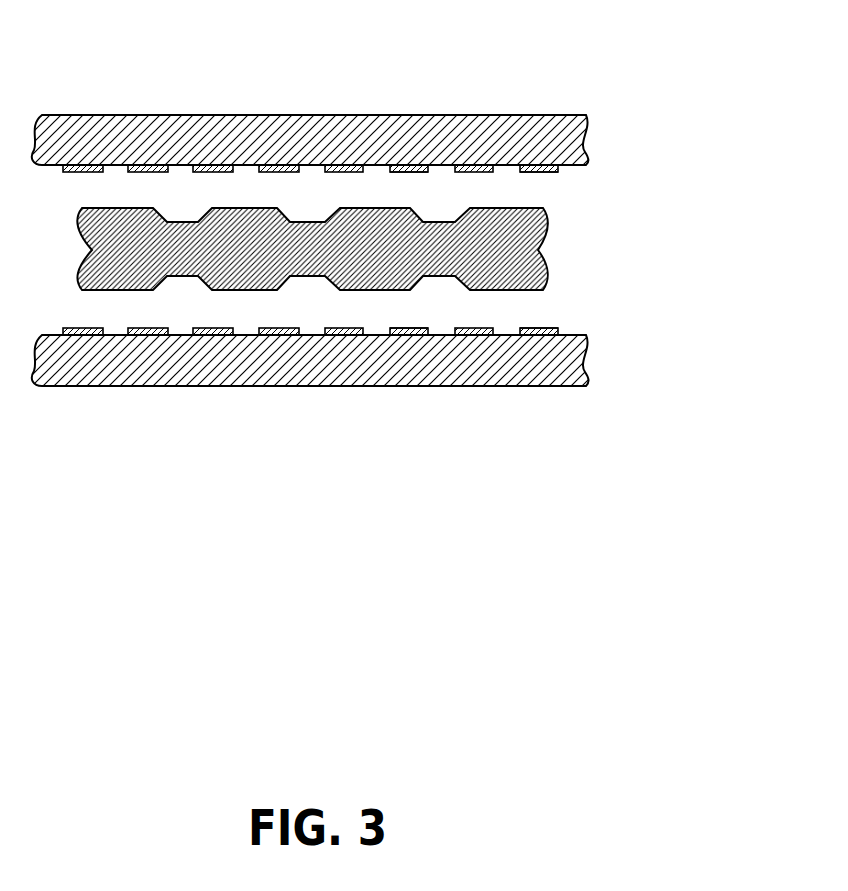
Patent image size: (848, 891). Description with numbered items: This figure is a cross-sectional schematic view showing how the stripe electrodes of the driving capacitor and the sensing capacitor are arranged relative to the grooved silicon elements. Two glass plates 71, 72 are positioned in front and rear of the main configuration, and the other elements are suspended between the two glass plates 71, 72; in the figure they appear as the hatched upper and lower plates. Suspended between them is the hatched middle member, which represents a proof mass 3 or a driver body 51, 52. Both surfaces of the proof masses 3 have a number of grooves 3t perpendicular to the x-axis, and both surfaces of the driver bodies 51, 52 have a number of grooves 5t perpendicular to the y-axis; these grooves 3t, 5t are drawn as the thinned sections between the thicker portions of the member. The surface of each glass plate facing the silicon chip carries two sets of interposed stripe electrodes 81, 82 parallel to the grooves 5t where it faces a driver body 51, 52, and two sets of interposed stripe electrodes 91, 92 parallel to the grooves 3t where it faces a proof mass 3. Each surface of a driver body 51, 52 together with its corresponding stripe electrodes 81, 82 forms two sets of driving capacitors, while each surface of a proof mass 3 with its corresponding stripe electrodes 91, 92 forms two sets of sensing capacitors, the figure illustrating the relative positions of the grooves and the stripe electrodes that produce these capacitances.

The glass plate 72 is at (562, 143).
The glass plate 71 is at (560, 367).
The proof mass 3 is at (413, 249).
The driver body 51 is at (413, 249).
The driver body 52 is at (540, 252).
The grooves 3t is at (279, 281).
The grooves 5t is at (308, 222).
The stripe electrodes 81 is at (310, 274).
The stripe electrodes 91 is at (467, 167).
The stripe electrodes 82 is at (587, 250).
The stripe electrodes 92 is at (412, 172).